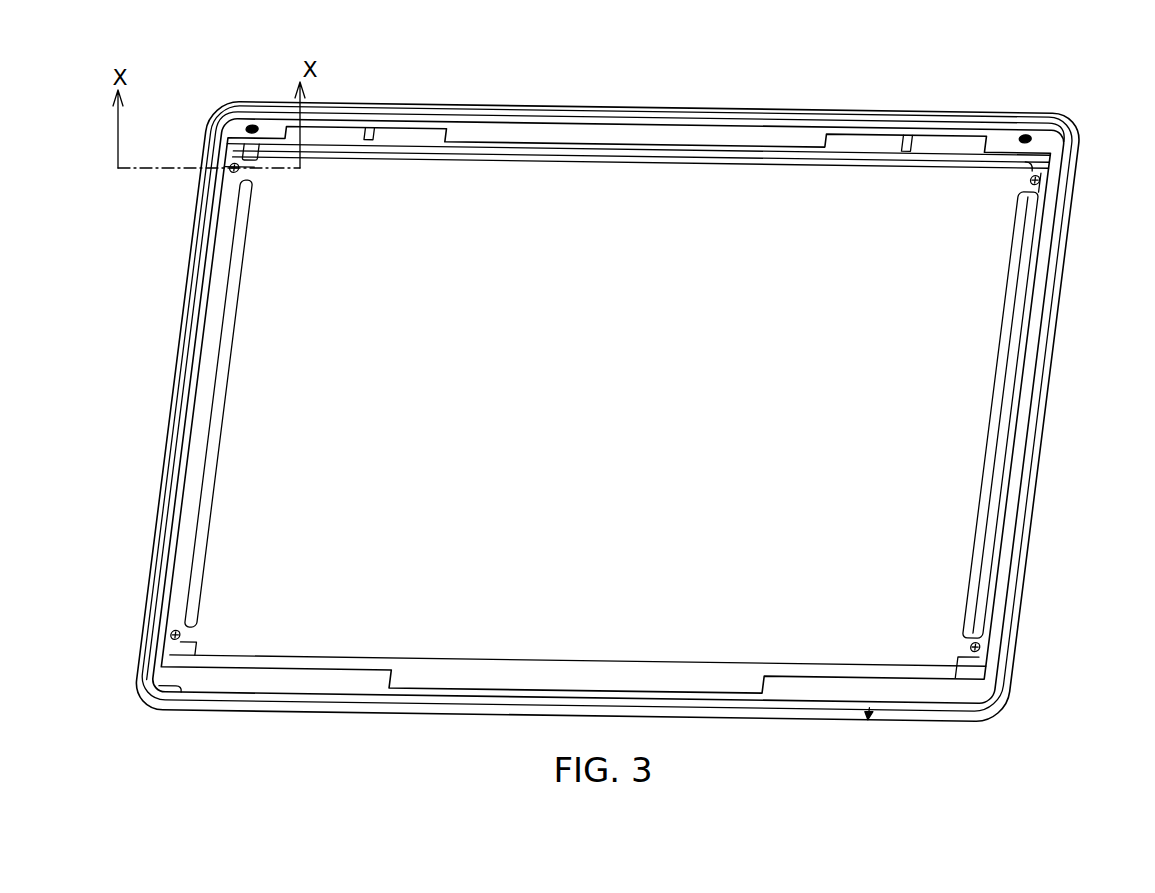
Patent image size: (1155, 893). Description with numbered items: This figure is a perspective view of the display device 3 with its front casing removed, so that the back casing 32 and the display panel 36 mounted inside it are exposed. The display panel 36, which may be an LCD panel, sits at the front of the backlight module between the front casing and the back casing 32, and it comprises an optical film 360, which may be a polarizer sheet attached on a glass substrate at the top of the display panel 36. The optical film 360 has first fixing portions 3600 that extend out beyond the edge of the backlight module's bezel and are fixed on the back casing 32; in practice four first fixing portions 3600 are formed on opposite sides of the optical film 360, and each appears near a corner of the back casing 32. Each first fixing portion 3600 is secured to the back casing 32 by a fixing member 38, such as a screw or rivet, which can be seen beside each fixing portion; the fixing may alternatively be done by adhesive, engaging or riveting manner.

The display device 3 is at (1040, 93).
The back casing 32 is at (1047, 353).
The display panel 36 is at (430, 157).
The optical film 360 is at (536, 183).
The first fixing portion 3600 is at (236, 162).
The fixing member 38 is at (228, 169).